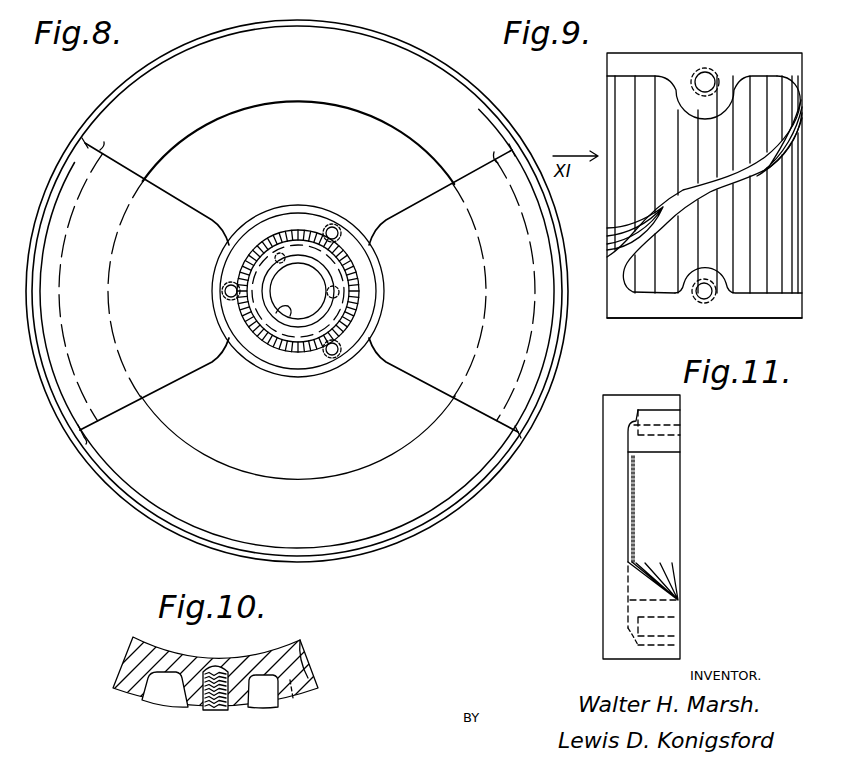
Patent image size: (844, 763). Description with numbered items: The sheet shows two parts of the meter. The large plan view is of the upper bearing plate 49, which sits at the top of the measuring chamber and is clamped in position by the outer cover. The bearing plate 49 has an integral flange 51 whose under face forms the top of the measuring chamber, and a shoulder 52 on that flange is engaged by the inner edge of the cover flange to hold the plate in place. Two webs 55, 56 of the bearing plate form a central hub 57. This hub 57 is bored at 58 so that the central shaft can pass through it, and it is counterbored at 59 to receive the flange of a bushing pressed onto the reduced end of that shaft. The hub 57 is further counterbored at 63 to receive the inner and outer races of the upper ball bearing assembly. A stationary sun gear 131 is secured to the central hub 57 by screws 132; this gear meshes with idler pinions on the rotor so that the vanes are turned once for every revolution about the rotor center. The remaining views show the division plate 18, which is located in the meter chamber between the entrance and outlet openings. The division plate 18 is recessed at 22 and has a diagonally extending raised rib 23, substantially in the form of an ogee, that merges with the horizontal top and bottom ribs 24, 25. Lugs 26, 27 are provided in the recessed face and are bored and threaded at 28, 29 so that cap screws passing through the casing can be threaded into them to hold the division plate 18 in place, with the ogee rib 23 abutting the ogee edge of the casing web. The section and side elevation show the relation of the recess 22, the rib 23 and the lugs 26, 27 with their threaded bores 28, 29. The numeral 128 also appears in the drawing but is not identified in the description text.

In FIG. 9, the division plate 18 is at (770, 53).
In FIG. 11, the division plate 18 is at (603, 536).
In FIG. 10, the division plate 18 is at (130, 653).
In FIG. 9, the recess 22 is at (638, 133).
In FIG. 11, the recess 22 is at (628, 489).
In FIG. 10, the recess 22 is at (167, 690).
In FIG. 9, the diagonal raised rib 23 is at (666, 206).
In FIG. 11, the diagonal raised rib 23 is at (683, 514).
In FIG. 10, the diagonal raised rib 23 is at (283, 703).
In FIG. 9, the top rib 24 is at (660, 62).
In FIG. 11, the top rib 24 is at (682, 405).
In FIG. 9, the bottom rib 25 is at (682, 303).
In FIG. 11, the bottom rib 25 is at (680, 649).
In FIG. 9, the lug 26 is at (722, 82).
In FIG. 11, the lug 26 is at (672, 444).
In FIG. 9, the lug 27 is at (724, 286).
In FIG. 11, the lug 27 is at (681, 604).
In FIG. 10, the lug 27 is at (238, 700).
In FIG. 9, the threaded bore 28 is at (693, 70).
In FIG. 11, the threaded bore 28 is at (668, 426).
In FIG. 9, the threaded bore 29 is at (702, 306).
In FIG. 11, the threaded bore 29 is at (662, 628).
In FIG. 10, the threaded bore 29 is at (215, 703).
In FIG. 8, the bearing plate 49 is at (395, 50).
In FIG. 8, the flange 51 is at (296, 496).
In FIG. 8, the shoulder 52 is at (435, 64).
In FIG. 8, the web 55 is at (176, 216).
In FIG. 8, the web 56 is at (418, 214).
In FIG. 8, the central hub 57 is at (298, 250).
In FIG. 8, the bore 58 is at (287, 311).
In FIG. 8, the counterbore 59 is at (327, 308).
In FIG. 8, the counterbore 63 is at (338, 346).
In FIG. 8, the web upper portion 128 is at (356, 117).
In FIG. 8, the stationary sun gear 131 is at (255, 330).
In FIG. 8, the screws 132 is at (340, 288).